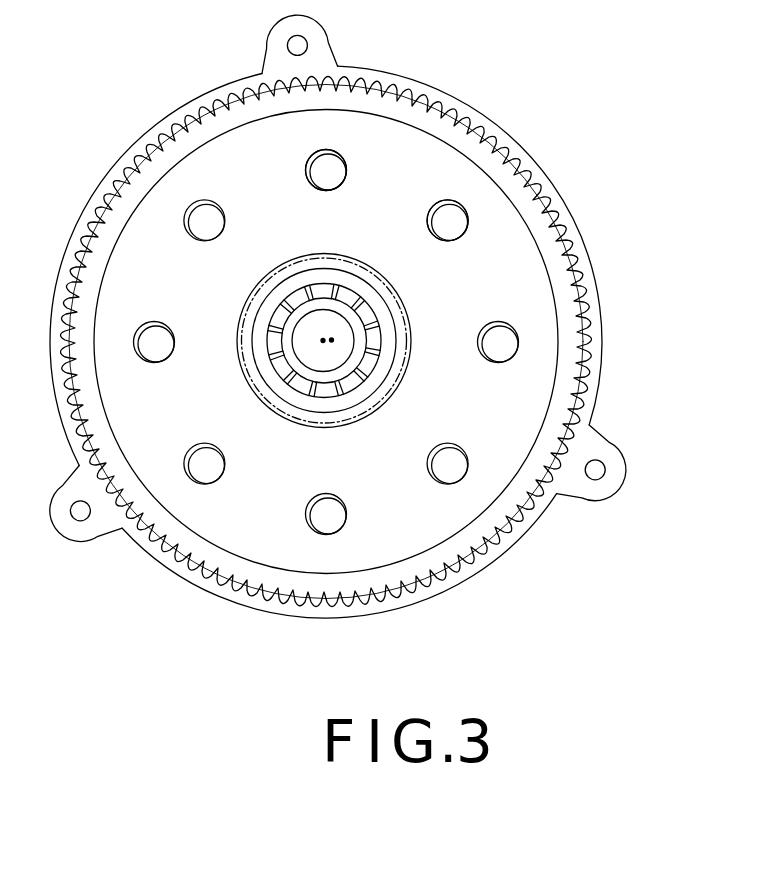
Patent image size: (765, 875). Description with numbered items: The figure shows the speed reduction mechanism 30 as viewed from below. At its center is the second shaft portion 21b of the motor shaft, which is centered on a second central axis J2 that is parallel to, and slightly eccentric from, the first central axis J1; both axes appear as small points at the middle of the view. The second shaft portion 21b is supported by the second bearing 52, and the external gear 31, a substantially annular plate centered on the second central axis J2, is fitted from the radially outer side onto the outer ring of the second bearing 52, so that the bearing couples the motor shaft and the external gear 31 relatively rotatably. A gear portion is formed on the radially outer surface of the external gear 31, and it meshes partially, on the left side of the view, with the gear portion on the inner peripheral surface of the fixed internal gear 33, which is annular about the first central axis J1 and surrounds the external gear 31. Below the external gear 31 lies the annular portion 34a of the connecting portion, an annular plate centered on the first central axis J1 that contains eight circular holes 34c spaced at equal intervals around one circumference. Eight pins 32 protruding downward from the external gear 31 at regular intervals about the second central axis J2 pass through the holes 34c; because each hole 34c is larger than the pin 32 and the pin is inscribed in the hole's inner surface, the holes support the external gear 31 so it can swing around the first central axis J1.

The speed reduction mechanism 30 is at (362, 329).
The external gear 31 is at (458, 130).
The pins 32 is at (442, 212).
The internal gear 33 is at (603, 341).
The annular portion 34a is at (484, 193).
The holes 34c is at (317, 160).
The second bearing 52 is at (393, 357).
The second shaft portion 21b is at (330, 358).
The first central axis J1 is at (332, 340).
The second central axis J2 is at (323, 340).